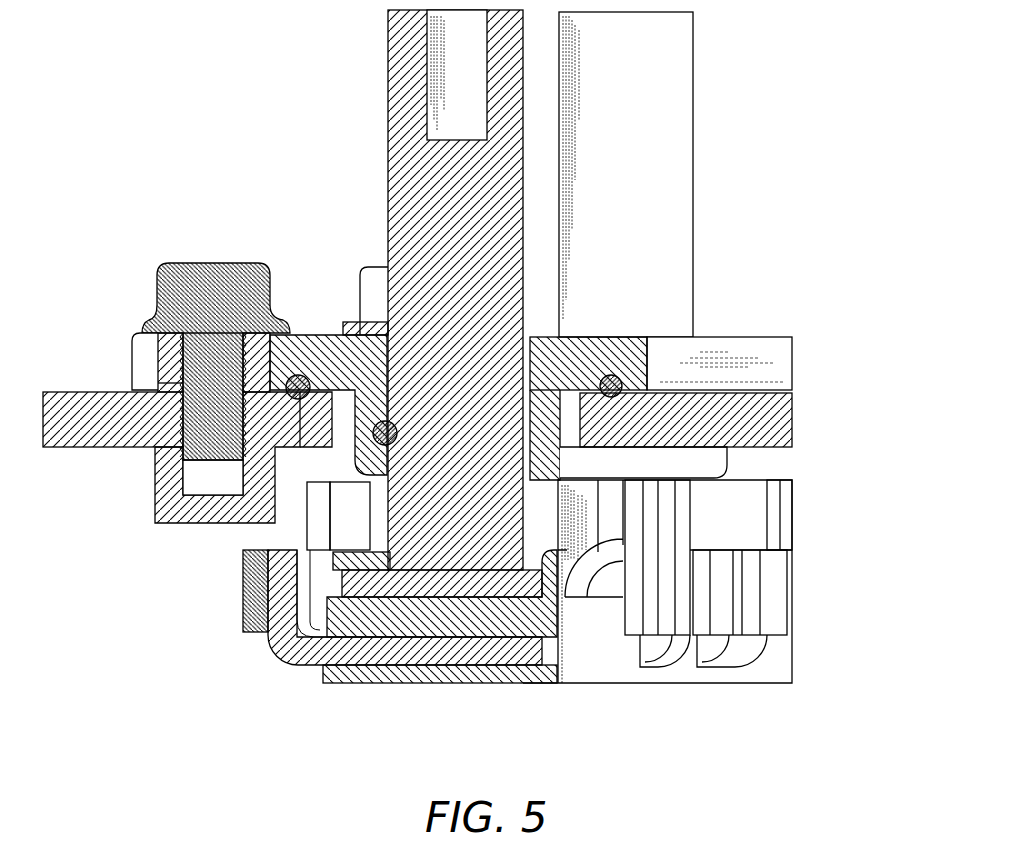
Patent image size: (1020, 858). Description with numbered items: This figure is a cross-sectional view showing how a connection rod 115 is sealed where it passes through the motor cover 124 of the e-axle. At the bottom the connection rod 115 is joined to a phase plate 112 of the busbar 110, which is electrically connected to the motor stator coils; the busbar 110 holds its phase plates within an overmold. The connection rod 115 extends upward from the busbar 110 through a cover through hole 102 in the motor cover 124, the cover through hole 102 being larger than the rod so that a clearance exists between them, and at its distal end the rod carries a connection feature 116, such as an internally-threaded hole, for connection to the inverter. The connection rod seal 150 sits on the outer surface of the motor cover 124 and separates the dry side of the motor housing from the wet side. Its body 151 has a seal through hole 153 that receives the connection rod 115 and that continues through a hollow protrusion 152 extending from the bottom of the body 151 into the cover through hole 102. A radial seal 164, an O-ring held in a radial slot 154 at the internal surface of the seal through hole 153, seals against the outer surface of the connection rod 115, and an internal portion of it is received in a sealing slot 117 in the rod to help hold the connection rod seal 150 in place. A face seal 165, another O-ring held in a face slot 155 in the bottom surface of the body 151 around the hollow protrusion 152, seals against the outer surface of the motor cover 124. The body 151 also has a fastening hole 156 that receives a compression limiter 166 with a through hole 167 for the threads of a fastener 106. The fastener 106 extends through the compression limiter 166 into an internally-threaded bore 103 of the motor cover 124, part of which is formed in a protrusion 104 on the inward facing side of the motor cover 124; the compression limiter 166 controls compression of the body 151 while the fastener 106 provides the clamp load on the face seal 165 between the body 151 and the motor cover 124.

The cover through hole 102 is at (337, 448).
The internally-threaded bore 103 is at (203, 478).
The protrusion 104 is at (167, 473).
The fastener 106 is at (160, 278).
The busbar 110 is at (824, 546).
The phase plate 112 is at (287, 638).
The connection rod 115 is at (407, 97).
The connection feature 116 is at (437, 115).
The sealing slot 117 is at (256, 578).
The motor cover 124 is at (67, 425).
The connection rod seal 150 is at (820, 339).
The body 151 is at (605, 355).
The hollow protrusion 152 is at (590, 412).
The seal through hole 153 is at (563, 362).
The radial slot 154 is at (360, 375).
The face slot 155 is at (652, 362).
The fastening hole 156 is at (143, 345).
The radial seal 164 is at (383, 422).
The face seal 165 is at (612, 375).
The compression limiter 166 is at (177, 377).
The through hole 167 is at (172, 382).